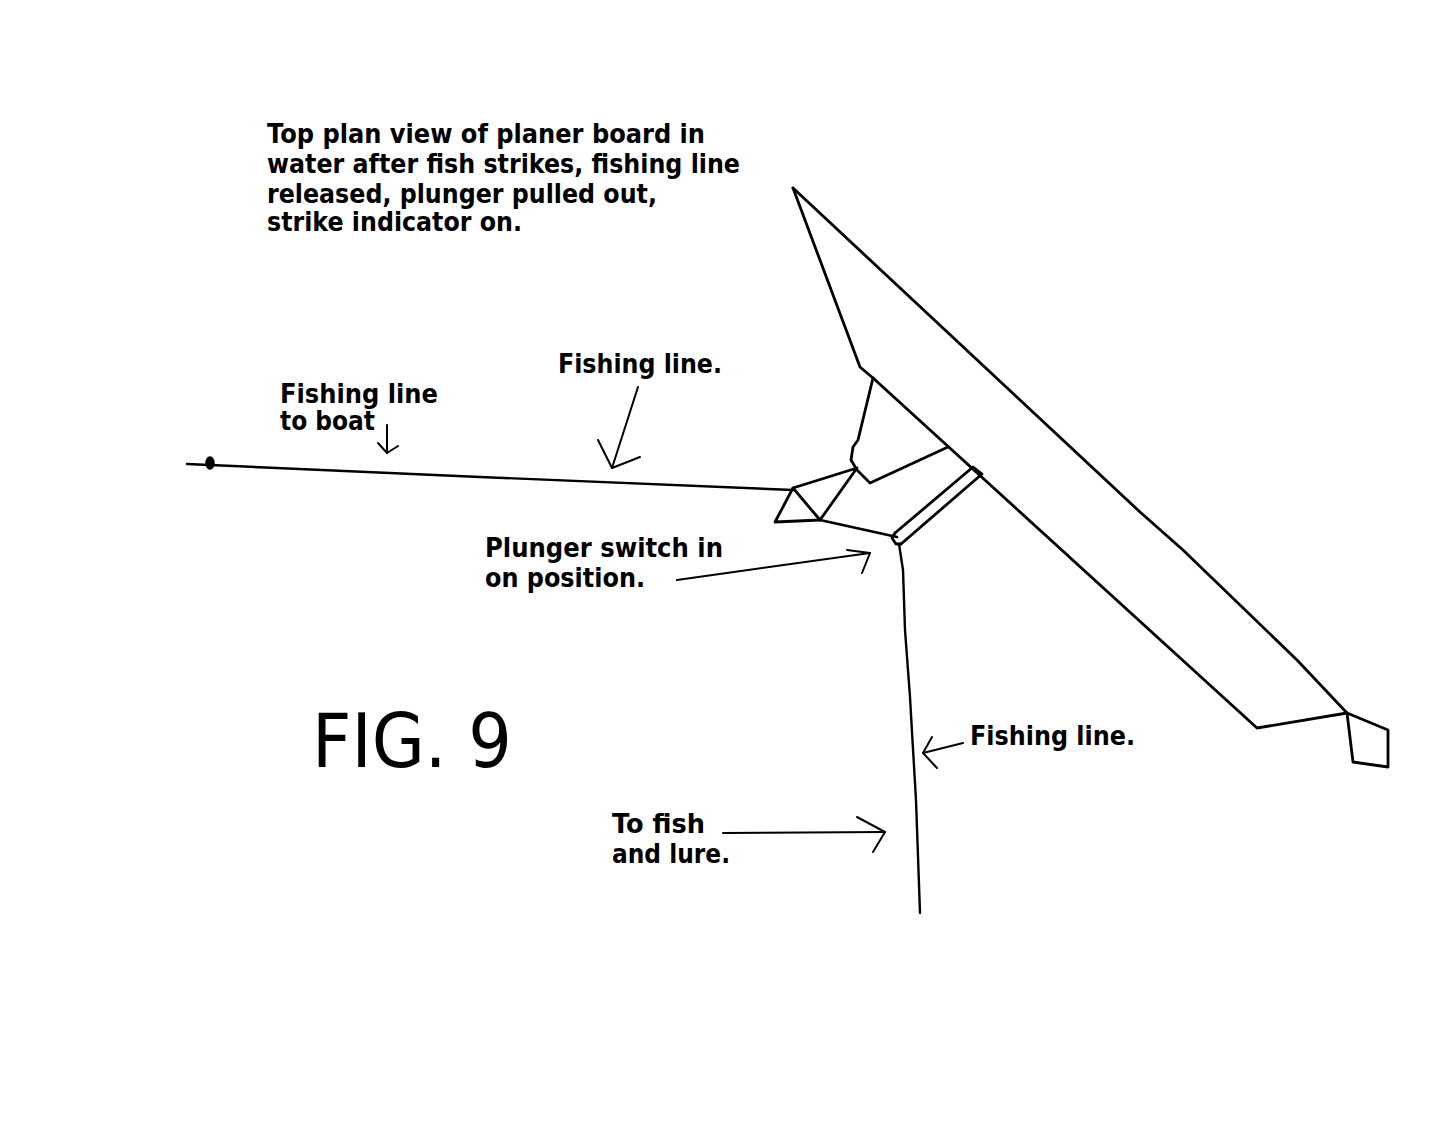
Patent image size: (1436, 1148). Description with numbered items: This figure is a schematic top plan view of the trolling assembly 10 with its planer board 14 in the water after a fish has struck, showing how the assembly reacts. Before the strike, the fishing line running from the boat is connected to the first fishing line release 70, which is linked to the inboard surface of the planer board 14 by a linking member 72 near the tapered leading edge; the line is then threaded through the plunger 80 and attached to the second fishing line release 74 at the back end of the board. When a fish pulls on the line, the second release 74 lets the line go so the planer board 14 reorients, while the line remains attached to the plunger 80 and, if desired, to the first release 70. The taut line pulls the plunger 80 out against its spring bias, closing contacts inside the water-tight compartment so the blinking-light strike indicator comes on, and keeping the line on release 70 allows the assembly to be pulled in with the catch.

The planer board assembly 10 is at (960, 212).
The planer board 14 is at (1162, 530).
The first fishing line release 70 is at (795, 489).
The linking member 72 is at (858, 440).
The second fishing line release 74 is at (1353, 758).
The plunger 80 is at (920, 530).